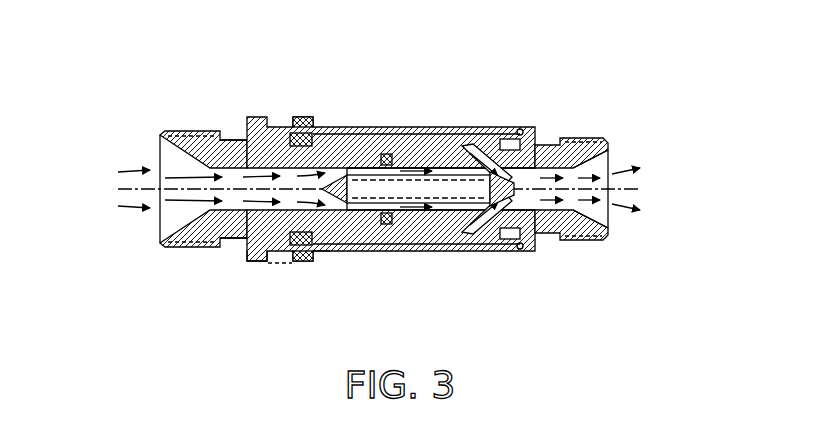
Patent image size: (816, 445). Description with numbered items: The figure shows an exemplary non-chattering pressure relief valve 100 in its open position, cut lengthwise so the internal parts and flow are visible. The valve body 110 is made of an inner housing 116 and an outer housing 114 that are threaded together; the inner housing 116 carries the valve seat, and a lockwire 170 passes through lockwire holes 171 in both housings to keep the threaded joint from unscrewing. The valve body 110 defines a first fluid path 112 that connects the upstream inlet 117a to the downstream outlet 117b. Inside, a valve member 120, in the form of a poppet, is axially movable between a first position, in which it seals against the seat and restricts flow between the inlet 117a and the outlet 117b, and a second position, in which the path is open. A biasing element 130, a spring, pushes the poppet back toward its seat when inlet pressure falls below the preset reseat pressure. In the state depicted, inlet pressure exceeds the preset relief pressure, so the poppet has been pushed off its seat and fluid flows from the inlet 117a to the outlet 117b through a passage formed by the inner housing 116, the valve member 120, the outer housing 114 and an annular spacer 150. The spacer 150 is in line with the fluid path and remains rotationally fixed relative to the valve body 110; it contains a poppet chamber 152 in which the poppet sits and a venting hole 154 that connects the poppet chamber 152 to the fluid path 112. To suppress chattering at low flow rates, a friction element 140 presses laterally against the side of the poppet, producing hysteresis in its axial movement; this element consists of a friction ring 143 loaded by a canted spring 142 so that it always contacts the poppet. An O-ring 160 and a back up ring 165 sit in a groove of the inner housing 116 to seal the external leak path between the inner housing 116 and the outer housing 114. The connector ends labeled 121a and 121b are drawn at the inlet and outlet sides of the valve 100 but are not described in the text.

The non-chattering pressure relief valve 100 is at (124, 253).
The valve body 110 is at (487, 253).
The first fluid path 112 is at (605, 172).
The outer housing 114 is at (415, 127).
The inner housing 116 is at (237, 139).
The inlet 117a is at (160, 224).
The outlet 117b is at (605, 200).
The valve member 120 is at (340, 172).
The inlet connector 121a is at (185, 129).
The outlet connector 121b is at (584, 137).
The biasing element 130 is at (457, 174).
The friction element 140 is at (421, 246).
The canted spring 142 is at (386, 154).
The friction ring 143 is at (385, 225).
The spacer 150 is at (457, 171).
The poppet chamber 152 is at (465, 234).
The venting hole 154 is at (506, 181).
The O-ring 160 is at (320, 249).
The back up ring 165 is at (298, 254).
The lockwire 170 is at (276, 266).
The lockwire holes 171 is at (252, 262).